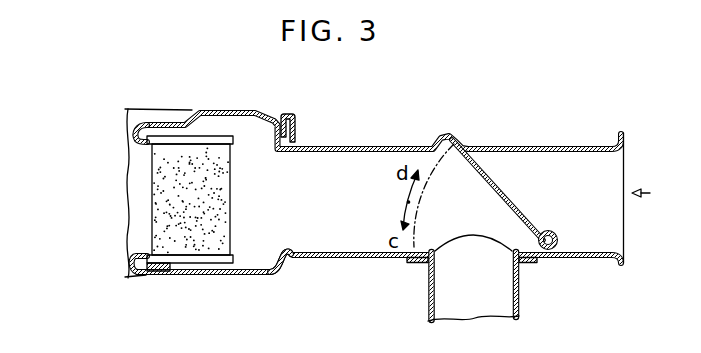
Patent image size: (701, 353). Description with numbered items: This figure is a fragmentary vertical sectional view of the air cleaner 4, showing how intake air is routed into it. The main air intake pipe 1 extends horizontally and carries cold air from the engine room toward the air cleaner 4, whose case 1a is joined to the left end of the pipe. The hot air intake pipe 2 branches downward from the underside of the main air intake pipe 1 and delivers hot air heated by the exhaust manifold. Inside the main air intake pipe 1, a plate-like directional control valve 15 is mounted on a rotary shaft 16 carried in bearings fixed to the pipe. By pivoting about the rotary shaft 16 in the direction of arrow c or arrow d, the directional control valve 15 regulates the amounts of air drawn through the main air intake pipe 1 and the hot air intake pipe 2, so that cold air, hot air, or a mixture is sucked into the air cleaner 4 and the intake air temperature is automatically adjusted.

The main air intake pipe 1 is at (556, 146).
The case 1a is at (277, 273).
The hot air intake pipe 2 is at (507, 285).
The air cleaner 4 is at (200, 268).
The directional control valve 15 is at (506, 190).
The rotary shaft 16 is at (560, 236).